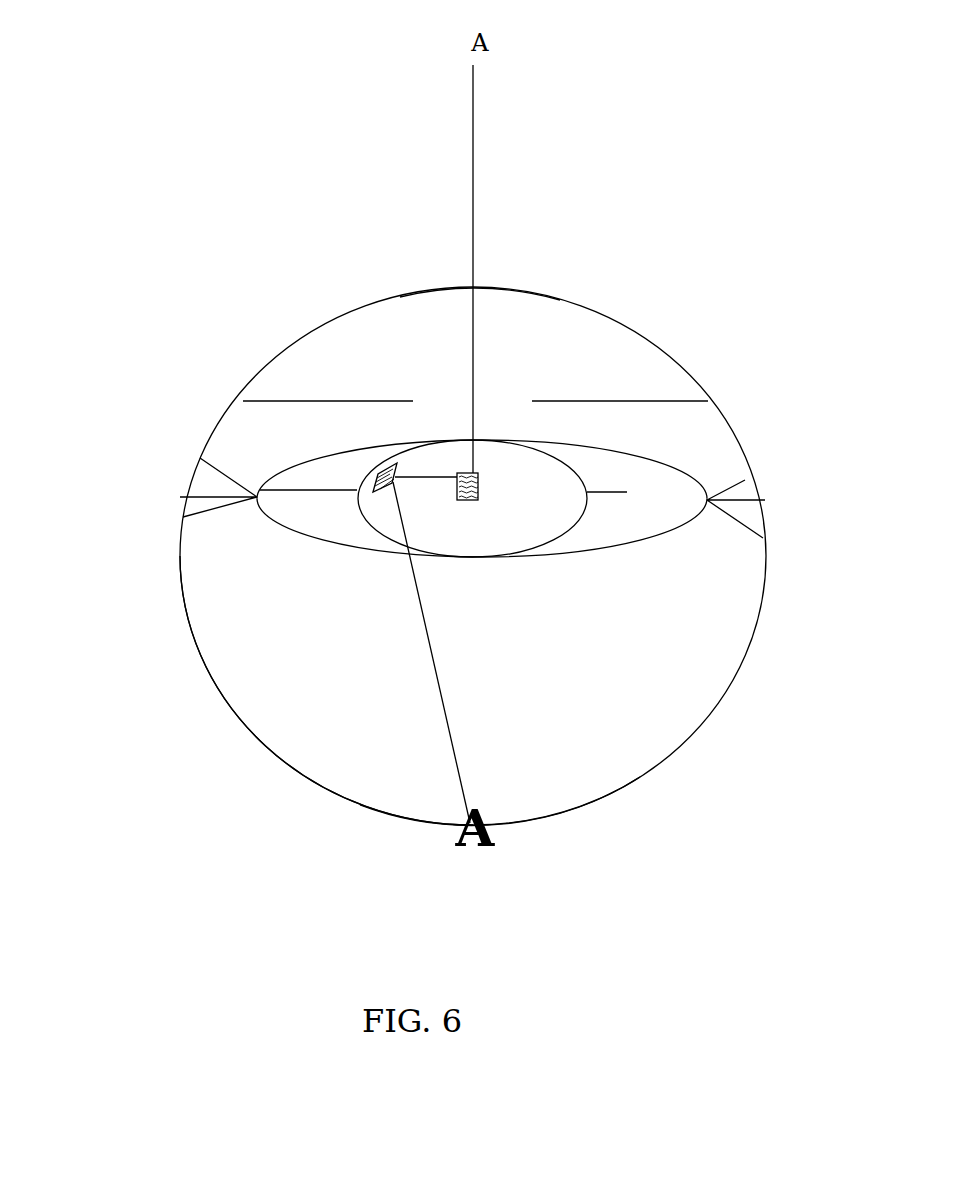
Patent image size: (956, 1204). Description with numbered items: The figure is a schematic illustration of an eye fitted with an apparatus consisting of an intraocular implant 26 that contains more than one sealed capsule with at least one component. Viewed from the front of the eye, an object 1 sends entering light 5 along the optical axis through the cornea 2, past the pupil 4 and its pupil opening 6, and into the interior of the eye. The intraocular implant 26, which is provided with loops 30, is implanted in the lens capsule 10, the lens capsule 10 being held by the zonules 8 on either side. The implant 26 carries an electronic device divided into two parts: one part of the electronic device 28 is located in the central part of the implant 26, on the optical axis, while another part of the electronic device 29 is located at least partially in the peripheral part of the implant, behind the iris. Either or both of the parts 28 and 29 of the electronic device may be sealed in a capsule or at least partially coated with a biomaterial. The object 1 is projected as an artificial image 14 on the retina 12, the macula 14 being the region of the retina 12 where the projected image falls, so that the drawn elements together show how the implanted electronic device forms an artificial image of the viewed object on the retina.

The object 1 is at (457, 35).
The cornea 2 is at (490, 287).
The pupil 4 is at (317, 401).
The entering light 5 is at (473, 172).
The pupil opening 6 is at (493, 403).
The zonules 8 is at (257, 497).
The lens capsule 10 is at (317, 535).
The retina 12 is at (277, 748).
The macula 14 is at (470, 825).
The intraocular implant 26 is at (513, 525).
The electronic device part 28 is at (478, 482).
The electronic device part 29 is at (375, 473).
The loops 30 is at (627, 492).